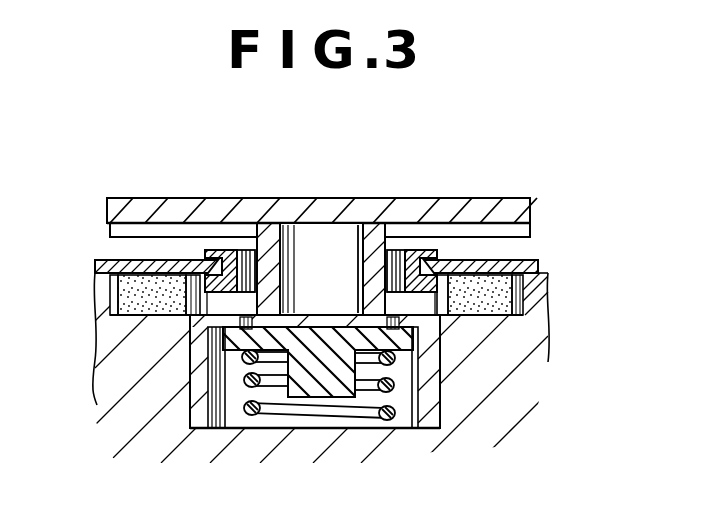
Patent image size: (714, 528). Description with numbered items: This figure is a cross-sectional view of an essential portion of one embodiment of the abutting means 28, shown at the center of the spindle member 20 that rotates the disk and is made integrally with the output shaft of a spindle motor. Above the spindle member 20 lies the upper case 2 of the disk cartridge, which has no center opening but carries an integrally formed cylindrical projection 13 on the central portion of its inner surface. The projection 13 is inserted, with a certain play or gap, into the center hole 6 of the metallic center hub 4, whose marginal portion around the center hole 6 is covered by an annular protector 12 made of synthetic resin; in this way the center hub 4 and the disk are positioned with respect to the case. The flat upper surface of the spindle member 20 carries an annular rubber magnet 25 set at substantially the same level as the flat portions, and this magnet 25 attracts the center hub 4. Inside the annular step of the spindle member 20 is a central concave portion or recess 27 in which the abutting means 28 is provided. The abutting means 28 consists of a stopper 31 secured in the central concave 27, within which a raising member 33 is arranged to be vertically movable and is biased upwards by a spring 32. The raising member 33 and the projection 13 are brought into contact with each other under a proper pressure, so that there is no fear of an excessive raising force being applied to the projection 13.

The upper case 2 is at (172, 217).
The center hub 4 is at (520, 260).
The center hole 6 is at (390, 252).
The annular protector 12 is at (431, 258).
The cylindrical projection 13 is at (347, 248).
The spindle member 20 is at (567, 372).
The magnet 25 is at (500, 292).
The central concave portion 27 is at (437, 397).
The abutting means 28 is at (228, 393).
The stopper 31 is at (244, 356).
The spring 32 is at (246, 379).
The raising member 33 is at (330, 380).